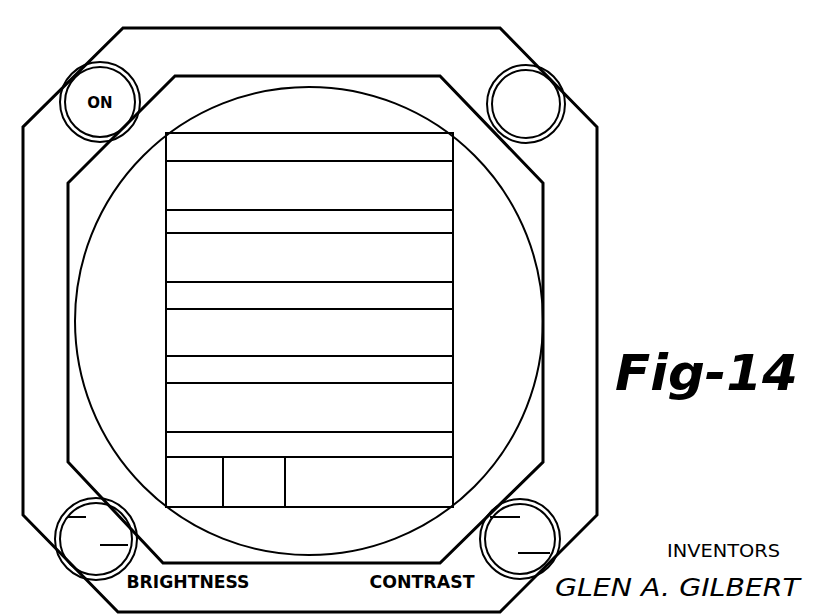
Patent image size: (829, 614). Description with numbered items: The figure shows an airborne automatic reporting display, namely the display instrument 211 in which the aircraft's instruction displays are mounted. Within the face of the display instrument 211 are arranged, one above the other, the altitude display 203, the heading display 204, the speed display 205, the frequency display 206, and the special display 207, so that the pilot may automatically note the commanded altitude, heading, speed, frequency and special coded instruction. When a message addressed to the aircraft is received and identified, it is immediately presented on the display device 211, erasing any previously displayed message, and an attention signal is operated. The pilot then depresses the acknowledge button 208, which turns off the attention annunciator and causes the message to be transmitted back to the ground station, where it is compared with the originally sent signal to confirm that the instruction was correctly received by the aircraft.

The display instrument 211 is at (523, 34).
The acknowledge button 208 is at (537, 87).
The altitude display 203 is at (438, 195).
The heading display 204 is at (440, 262).
The speed display 205 is at (440, 335).
The frequency display 206 is at (443, 400).
The special display 207 is at (447, 477).